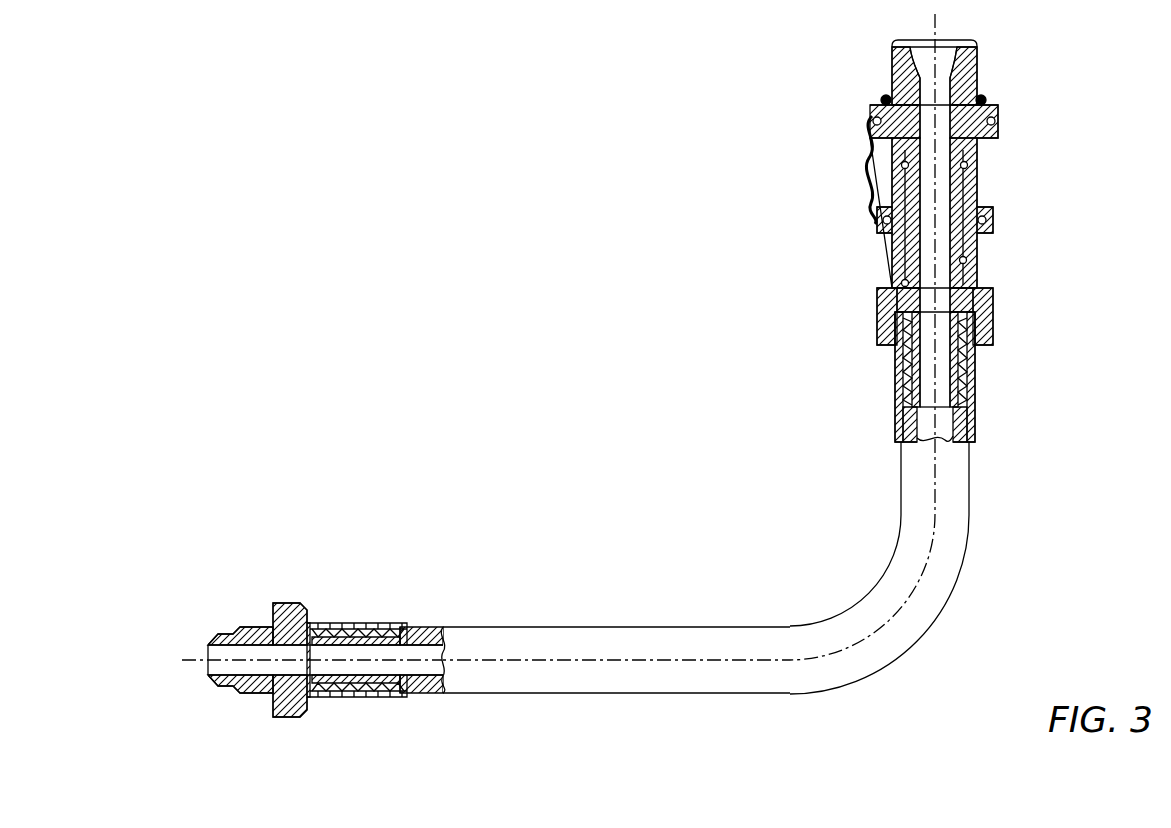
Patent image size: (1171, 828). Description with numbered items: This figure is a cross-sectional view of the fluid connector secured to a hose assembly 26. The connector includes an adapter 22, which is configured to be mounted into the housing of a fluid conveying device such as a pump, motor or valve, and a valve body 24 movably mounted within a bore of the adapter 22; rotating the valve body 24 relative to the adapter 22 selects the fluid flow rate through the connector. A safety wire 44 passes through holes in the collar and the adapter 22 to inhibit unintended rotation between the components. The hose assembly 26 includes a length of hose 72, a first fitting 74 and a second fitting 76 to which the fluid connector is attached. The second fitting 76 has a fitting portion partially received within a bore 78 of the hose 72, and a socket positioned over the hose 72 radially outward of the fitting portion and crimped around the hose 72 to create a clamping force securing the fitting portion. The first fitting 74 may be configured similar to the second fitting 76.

The adapter 22 is at (978, 53).
The valve body 24 is at (964, 175).
The hose assembly 26 is at (702, 612).
The safety wire 44 is at (856, 172).
The hose 72 is at (936, 588).
The first fitting 74 is at (287, 598).
The second fitting 76 is at (888, 382).
The bore 78 is at (944, 414).